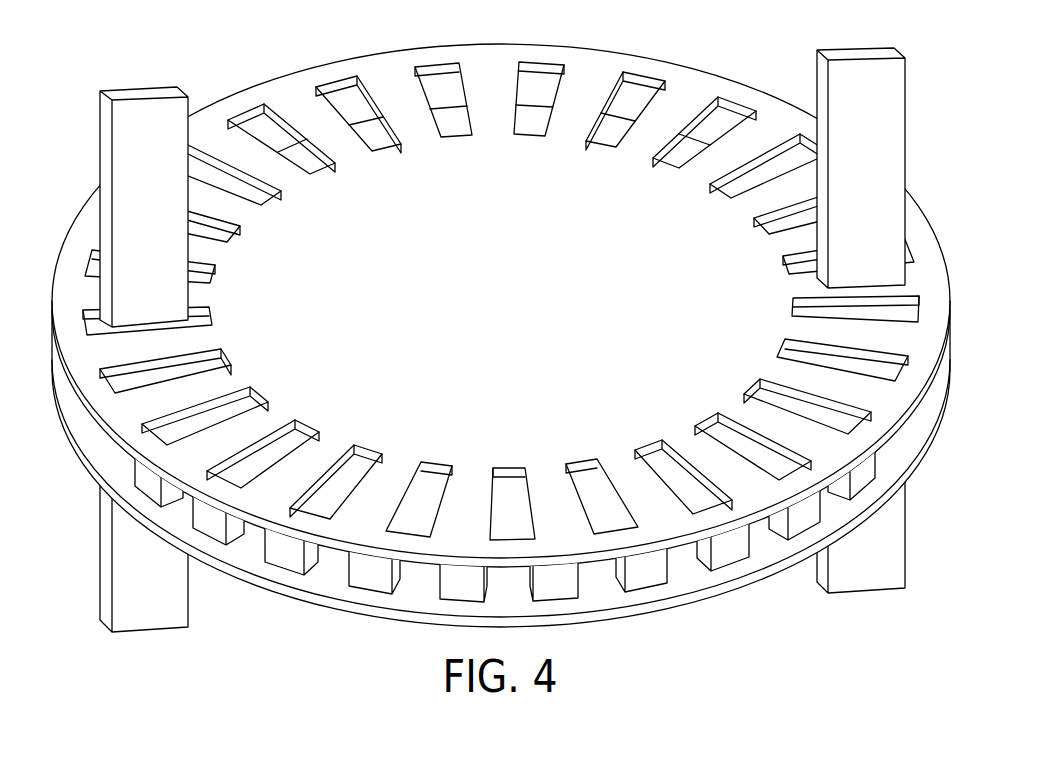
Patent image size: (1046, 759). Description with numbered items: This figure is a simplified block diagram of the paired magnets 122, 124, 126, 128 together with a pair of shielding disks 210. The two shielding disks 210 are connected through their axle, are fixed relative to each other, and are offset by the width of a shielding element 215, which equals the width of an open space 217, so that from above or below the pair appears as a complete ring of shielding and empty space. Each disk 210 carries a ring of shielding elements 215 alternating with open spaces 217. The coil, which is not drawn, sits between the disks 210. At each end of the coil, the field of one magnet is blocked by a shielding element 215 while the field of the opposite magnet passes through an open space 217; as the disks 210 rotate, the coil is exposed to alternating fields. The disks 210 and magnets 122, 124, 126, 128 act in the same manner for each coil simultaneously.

The magnet 122 is at (173, 115).
The magnet 124 is at (855, 155).
The magnet 126 is at (907, 560).
The magnet 128 is at (190, 595).
The shielding disk 210 is at (522, 307).
The shielding element 215 is at (208, 318).
The open space 217 is at (797, 280).